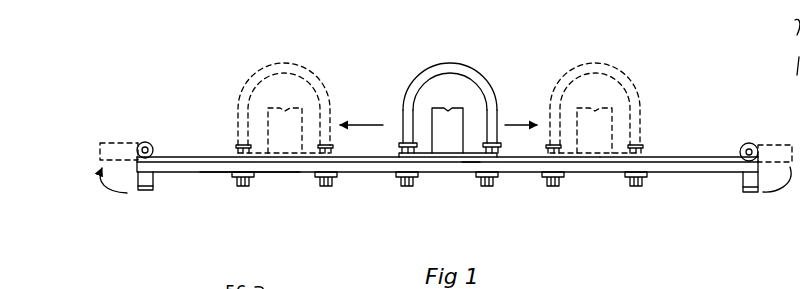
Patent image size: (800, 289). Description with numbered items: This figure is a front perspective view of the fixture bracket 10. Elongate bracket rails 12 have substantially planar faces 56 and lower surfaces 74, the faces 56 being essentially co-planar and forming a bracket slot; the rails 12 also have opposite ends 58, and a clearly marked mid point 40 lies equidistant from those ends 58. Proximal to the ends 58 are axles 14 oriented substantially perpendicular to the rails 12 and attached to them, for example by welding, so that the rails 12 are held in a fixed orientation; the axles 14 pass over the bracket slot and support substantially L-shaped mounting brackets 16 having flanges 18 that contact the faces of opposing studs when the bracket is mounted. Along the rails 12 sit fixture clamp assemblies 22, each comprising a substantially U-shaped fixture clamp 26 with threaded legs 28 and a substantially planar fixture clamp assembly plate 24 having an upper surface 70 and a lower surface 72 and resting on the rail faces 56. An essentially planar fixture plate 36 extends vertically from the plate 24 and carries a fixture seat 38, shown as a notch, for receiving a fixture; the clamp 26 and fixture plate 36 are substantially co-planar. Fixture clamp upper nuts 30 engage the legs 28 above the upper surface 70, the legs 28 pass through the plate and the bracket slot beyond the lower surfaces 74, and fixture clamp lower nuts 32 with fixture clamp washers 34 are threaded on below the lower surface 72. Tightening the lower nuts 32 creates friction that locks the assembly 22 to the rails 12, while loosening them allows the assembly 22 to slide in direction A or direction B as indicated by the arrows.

The fixture bracket 10 is at (178, 285).
The bracket rails 12 is at (187, 157).
The axles 14 is at (147, 143).
The mounting brackets 16 is at (153, 178).
The flanges 18 is at (140, 190).
The fixture clamp assembly 22 is at (288, 62).
The fixture clamp assembly plate 24 is at (404, 105).
The fixture clamp 26 is at (412, 97).
The fixture clamp legs 28 is at (402, 122).
The fixture clamp upper nuts 30 is at (398, 147).
The fixture clamp lower nuts 32 is at (407, 186).
The fixture clamp washers 34 is at (397, 183).
The fixture plate 36 is at (447, 127).
The fixture seat 38 is at (462, 108).
The mid point 40 is at (451, 153).
The planar faces 56 is at (667, 157).
The ends 58 is at (127, 193).
The upper surface 70 is at (488, 128).
The lower surface 72 is at (471, 153).
The lower surfaces 74 is at (270, 172).